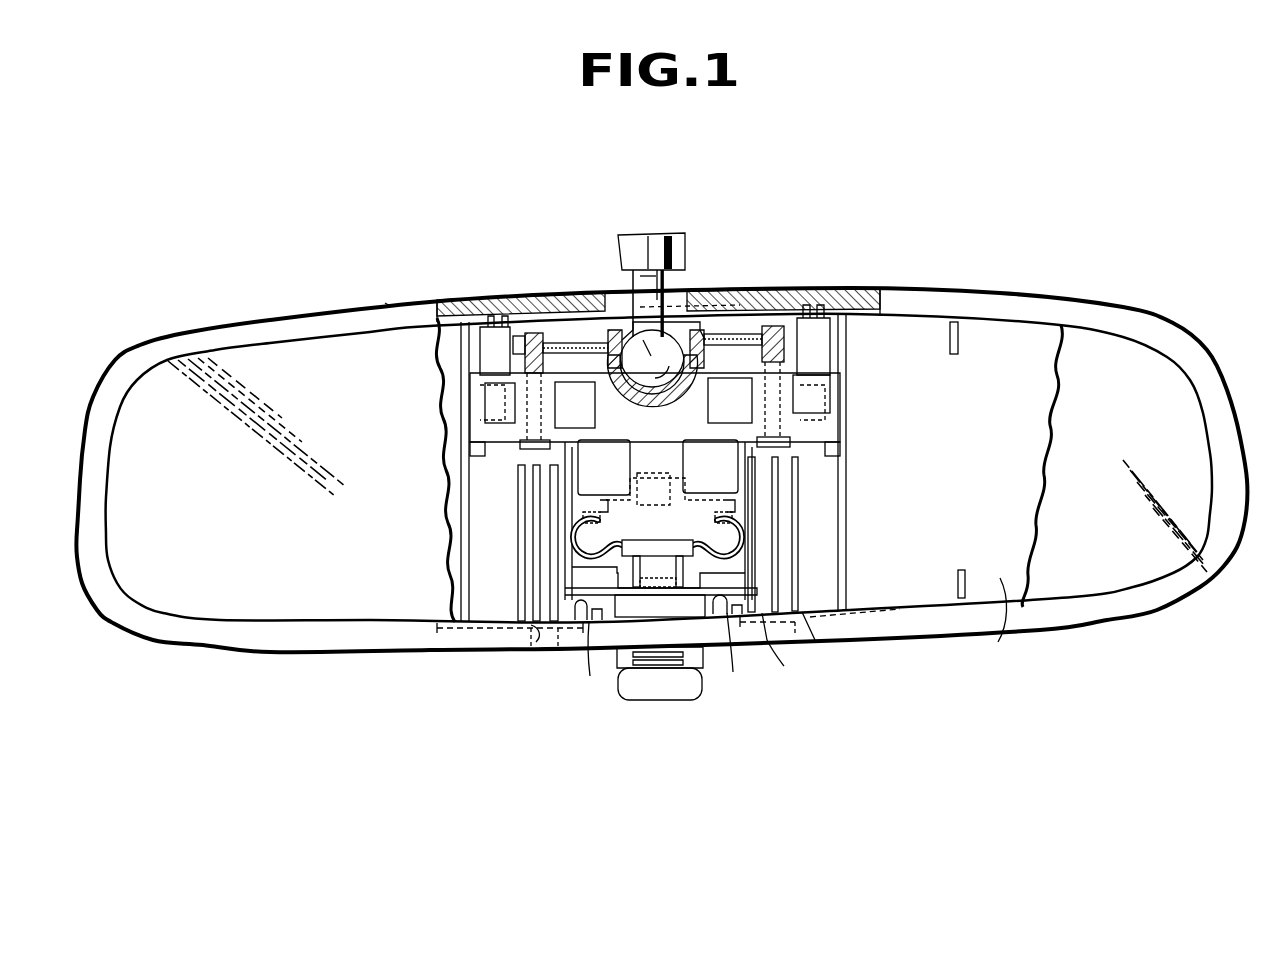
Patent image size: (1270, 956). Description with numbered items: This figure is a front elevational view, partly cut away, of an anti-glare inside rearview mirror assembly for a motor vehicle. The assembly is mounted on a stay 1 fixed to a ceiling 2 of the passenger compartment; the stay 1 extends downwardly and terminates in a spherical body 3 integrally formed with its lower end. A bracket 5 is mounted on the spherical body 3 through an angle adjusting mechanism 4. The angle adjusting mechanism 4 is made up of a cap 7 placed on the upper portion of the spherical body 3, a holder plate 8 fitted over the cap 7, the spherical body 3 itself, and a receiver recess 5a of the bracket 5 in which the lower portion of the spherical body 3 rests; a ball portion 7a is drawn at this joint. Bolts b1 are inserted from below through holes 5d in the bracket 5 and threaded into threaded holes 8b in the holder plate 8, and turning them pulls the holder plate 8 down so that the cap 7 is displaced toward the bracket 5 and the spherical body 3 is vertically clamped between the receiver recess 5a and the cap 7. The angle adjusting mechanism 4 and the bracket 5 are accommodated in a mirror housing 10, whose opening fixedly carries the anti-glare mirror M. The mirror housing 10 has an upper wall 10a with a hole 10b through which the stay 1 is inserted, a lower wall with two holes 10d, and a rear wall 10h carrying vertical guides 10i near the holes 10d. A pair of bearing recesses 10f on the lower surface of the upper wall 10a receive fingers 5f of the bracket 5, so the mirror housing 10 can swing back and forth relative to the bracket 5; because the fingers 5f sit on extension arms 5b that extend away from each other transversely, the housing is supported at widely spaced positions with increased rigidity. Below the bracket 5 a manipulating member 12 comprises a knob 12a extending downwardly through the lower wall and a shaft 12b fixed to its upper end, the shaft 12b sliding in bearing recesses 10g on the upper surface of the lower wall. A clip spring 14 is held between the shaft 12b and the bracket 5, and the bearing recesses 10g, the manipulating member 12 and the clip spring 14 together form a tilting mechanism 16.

The stay 1 is at (668, 238).
The ceiling 2 is at (648, 228).
The spherical body 3 is at (648, 269).
The angle adjusting mechanism 4 is at (726, 318).
The bracket 5 is at (733, 358).
The receiver recess 5a is at (636, 372).
The extension arms 5b is at (490, 455).
The holes 5d is at (440, 412).
The fingers 5f is at (470, 367).
The cap 7 is at (725, 330).
The ball 7a is at (663, 328).
The holder plate 8 is at (555, 298).
The threaded holes 8b is at (518, 303).
The mirror housing 10 is at (1143, 306).
The upper wall 10a is at (385, 303).
The hole 10b is at (607, 290).
The holes 10d is at (531, 650).
The bearing recesses 10f is at (455, 300).
The bearing recesses 10g is at (590, 676).
The rear wall 10h is at (994, 642).
The vertical guides 10i is at (520, 570).
The manipulating member 12 is at (712, 739).
The knob 12a is at (650, 702).
The shaft 12b is at (793, 668).
The clip spring 14 is at (580, 520).
The tilting mechanism 16 is at (722, 727).
The anti-glare mirror M is at (1110, 560).
The bolts b1 is at (520, 445).